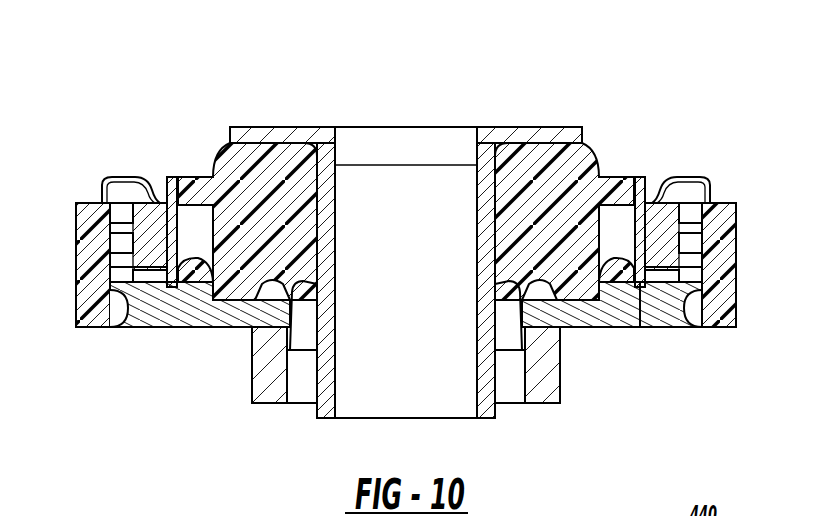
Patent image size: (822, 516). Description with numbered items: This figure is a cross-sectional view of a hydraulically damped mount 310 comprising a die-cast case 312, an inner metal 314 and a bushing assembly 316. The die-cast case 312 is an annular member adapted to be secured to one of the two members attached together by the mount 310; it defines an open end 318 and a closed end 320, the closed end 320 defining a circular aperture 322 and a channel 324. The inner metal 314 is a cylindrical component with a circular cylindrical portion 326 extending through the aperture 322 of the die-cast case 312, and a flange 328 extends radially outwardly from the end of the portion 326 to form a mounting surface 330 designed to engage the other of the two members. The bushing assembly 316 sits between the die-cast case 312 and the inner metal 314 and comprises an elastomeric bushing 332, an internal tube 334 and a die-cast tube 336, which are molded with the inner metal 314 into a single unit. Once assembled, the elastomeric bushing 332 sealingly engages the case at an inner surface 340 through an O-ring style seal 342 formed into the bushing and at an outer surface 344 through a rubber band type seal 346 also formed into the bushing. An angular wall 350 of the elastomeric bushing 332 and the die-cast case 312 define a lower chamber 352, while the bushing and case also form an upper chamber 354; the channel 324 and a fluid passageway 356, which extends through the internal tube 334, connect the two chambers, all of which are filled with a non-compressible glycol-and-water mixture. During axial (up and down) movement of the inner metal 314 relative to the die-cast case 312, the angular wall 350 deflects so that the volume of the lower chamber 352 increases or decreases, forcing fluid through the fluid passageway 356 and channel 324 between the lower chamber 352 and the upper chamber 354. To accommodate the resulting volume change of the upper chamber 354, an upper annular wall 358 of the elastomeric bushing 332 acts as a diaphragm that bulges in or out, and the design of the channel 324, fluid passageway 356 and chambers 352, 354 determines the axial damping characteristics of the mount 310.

The hydraulically damped mount 310 is at (717, 78).
The die-cast case 312 is at (653, 317).
The inner metal 314 is at (409, 160).
The bushing assembly 316 is at (237, 177).
The open end 318 is at (617, 190).
The closed end 320 is at (613, 313).
The circular aperture 322 is at (231, 328).
The channel 324 is at (123, 213).
The circular cylindrical portion 326 is at (323, 330).
The flange 328 is at (583, 131).
The mounting surface 330 is at (530, 127).
The elastomeric bushing 332 is at (495, 222).
The internal tube 334 is at (647, 258).
The die-cast tube 336 is at (540, 403).
The inner surface 340 is at (697, 300).
The O-ring style seal 342 is at (182, 270).
The outer surface 344 is at (735, 308).
The rubber band type seal 346 is at (76, 307).
The angular wall 350 is at (133, 258).
The lower chamber 352 is at (700, 220).
The upper chamber 354 is at (668, 193).
The fluid passageway 356 is at (150, 277).
The upper annular wall 358 is at (135, 177).